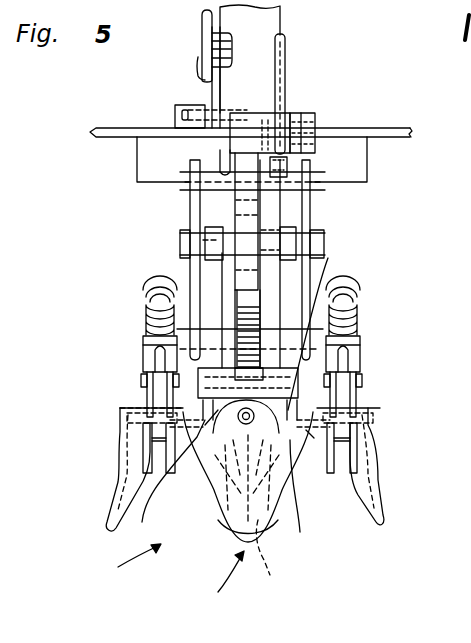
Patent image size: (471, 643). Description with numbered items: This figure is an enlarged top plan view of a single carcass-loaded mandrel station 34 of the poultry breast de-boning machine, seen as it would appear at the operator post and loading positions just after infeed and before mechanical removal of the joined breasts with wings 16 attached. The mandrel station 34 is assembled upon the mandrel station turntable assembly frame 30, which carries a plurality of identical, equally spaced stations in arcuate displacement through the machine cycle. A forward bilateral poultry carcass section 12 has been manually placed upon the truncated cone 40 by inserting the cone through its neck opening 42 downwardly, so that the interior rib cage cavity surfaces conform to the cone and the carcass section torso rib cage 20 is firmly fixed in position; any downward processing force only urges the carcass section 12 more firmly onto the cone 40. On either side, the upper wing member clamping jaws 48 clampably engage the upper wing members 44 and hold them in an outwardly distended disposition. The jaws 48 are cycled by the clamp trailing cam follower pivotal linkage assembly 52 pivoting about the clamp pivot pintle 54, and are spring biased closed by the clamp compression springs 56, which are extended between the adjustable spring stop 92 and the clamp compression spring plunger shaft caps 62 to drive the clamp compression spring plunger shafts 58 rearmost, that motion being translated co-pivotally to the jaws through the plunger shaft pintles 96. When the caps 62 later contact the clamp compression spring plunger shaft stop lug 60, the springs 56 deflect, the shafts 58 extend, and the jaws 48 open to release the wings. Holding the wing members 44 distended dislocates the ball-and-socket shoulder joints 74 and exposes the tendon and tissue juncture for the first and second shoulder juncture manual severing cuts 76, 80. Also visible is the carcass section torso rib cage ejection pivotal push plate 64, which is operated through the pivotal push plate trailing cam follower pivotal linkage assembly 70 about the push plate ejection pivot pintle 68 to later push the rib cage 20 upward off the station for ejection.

The forward bilateral poultry carcass section 12 is at (217, 578).
The wings 16 is at (121, 458).
The carcass section torso rib cage 20 is at (277, 556).
The mandrel station turntable assembly frame 30 is at (370, 128).
The mandrel station 34 is at (123, 560).
The truncated cone 40 is at (234, 536).
The neck opening 42 is at (216, 425).
The upper wing members 44 is at (140, 398).
The upper wing member clamping jaws 48 is at (200, 443).
The clamp trailing cam follower pivotal linkage assembly 52 is at (191, 64).
The clamp pivot pintle 54 is at (325, 246).
The clamp compression springs 56 is at (146, 314).
The clamp compression spring plunger shafts 58 is at (150, 356).
The clamp compression spring plunger shaft stop lug 60 is at (150, 160).
The clamp compression spring plunger shaft caps 62 is at (146, 284).
The carcass section torso rib cage ejection pivotal push plate 64 is at (312, 438).
The push plate ejection pivot pintle 68 is at (236, 368).
The pivotal push plate trailing cam follower pivotal linkage assembly 70 is at (297, 94).
The ball-and-socket shoulder joints 74 is at (235, 486).
The first shoulder juncture tendon and tissue manual severing cut 76 is at (205, 385).
The second shoulder juncture tendon and tissue manual severing cut 80 is at (318, 290).
The adjustable spring stop 92 is at (152, 363).
The plunger shaft pintles 96 is at (142, 382).